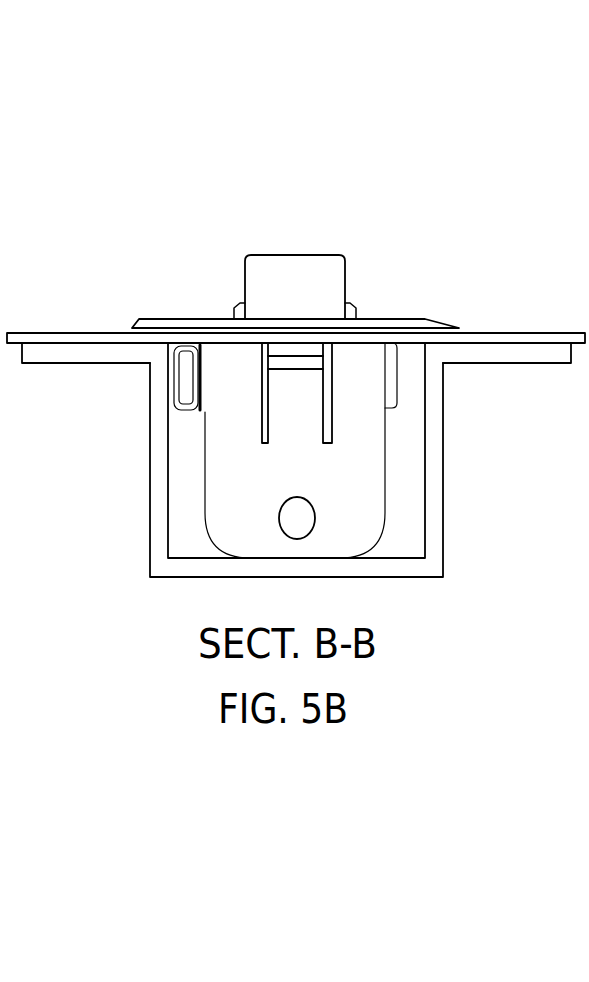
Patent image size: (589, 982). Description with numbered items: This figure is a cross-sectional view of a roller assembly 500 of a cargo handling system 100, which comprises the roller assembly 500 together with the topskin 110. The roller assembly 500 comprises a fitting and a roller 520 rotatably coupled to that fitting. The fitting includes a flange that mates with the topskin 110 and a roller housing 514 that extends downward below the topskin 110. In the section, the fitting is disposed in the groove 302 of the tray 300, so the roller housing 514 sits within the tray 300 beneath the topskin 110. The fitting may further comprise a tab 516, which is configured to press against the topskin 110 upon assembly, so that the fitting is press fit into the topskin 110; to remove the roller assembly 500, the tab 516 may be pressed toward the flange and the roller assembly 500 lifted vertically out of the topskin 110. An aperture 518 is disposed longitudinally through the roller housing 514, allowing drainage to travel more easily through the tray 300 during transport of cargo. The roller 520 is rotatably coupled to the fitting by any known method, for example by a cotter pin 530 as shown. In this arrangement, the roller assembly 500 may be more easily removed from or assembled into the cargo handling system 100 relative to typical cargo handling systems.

The cargo handling system 100 is at (190, 122).
The topskin 110 is at (68, 333).
The tray 300 is at (115, 442).
The groove 302 is at (180, 497).
The roller assembly 500 is at (333, 205).
The roller housing 514 is at (301, 450).
The tab 516 is at (320, 387).
The aperture 518 is at (303, 517).
The roller 520 is at (295, 287).
The cotter pin 530 is at (182, 385).